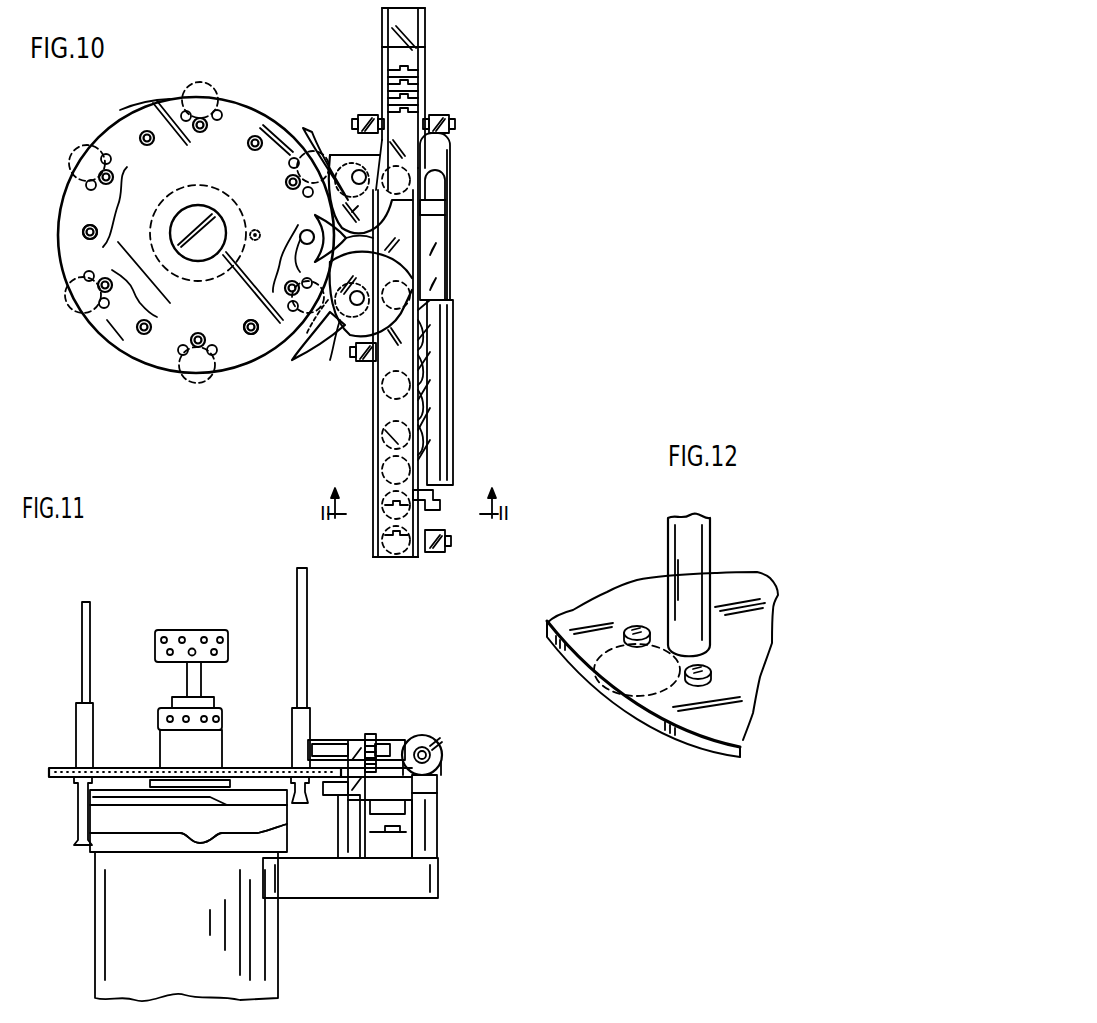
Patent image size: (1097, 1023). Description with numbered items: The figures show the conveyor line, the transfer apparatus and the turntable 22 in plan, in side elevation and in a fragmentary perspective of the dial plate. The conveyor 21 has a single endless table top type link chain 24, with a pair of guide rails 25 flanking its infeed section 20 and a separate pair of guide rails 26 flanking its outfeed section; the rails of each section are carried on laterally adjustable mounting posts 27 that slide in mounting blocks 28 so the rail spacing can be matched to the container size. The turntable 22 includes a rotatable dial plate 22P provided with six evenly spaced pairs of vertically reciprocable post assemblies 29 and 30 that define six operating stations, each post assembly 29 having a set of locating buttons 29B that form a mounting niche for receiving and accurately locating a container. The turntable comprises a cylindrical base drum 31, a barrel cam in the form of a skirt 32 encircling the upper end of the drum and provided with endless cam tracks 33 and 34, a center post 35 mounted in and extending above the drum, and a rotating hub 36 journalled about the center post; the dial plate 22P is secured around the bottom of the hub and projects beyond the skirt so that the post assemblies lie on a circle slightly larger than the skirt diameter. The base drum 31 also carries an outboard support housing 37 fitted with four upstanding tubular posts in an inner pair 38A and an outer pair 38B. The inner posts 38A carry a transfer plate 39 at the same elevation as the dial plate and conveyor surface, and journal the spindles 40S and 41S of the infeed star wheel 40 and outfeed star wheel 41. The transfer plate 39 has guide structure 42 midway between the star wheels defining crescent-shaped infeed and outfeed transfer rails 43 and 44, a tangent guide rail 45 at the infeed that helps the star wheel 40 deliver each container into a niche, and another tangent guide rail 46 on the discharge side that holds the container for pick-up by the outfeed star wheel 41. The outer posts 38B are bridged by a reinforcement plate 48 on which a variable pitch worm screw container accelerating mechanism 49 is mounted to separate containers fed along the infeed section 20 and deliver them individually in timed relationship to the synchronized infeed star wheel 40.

In FIG. 10, the infeed section 20 is at (370, 452).
In FIG. 10, the guide rail 21 is at (374, 35).
In FIG. 10, the turntable 22 is at (140, 92).
In FIG. 10, the dial plate 22P is at (240, 163).
In FIG. 11, the dial plate 22P is at (100, 770).
In FIG. 12, the dial plate 22P is at (598, 615).
In FIG. 10, the link chain 24 is at (420, 84).
In FIG. 11, the link chain 24 is at (392, 806).
In FIG. 10, the guide rails 25 is at (416, 558).
In FIG. 10, the guide rails 26 is at (398, 47).
In FIG. 10, the mounting posts 27 is at (372, 116).
In FIG. 11, the mounting posts 27 is at (372, 742).
In FIG. 10, the mounting blocks 28 is at (356, 122).
In FIG. 11, the mounting blocks 28 is at (357, 745).
In FIG. 10, the post assembly 29 is at (112, 176).
In FIG. 12, the post assembly 29 is at (700, 563).
In FIG. 10, the locating buttons 29B is at (106, 155).
In FIG. 12, the locating buttons 29B is at (636, 626).
In FIG. 10, the post assembly 30 is at (86, 235).
In FIG. 11, the post assembly 30 is at (310, 642).
In FIG. 11, the base drum 31 is at (148, 981).
In FIG. 11, the skirt 32 is at (131, 835).
In FIG. 11, the cam track 33 is at (155, 800).
In FIG. 11, the cam track 34 is at (125, 844).
In FIG. 11, the center post 35 is at (188, 680).
In FIG. 11, the rotating hub 36 is at (208, 753).
In FIG. 11, the outboard support housing 37 is at (358, 891).
In FIG. 11, the inner pair of posts 38A is at (338, 822).
In FIG. 11, the outer pair of posts 38B is at (430, 850).
In FIG. 10, the transfer plate 39 is at (352, 310).
In FIG. 11, the transfer plate 39 is at (335, 785).
In FIG. 10, the infeed star wheel 40 is at (371, 287).
In FIG. 11, the infeed star wheel 40 is at (332, 748).
In FIG. 10, the spindle 40S is at (357, 306).
In FIG. 10, the outfeed star wheel 41 is at (370, 194).
In FIG. 10, the spindle 41S is at (355, 170).
In FIG. 10, the guide structure 42 is at (412, 248).
In FIG. 11, the guide structure 42 is at (341, 740).
In FIG. 10, the infeed transfer rail 43 is at (320, 280).
In FIG. 10, the outfeed transfer rail 44 is at (322, 218).
In FIG. 10, the tangent guide rail 45 is at (292, 354).
In FIG. 10, the tangent guide rail 46 is at (320, 150).
In FIG. 11, the reinforcement plate 48 is at (438, 794).
In FIG. 10, the container accelerating mechanism 49 is at (455, 320).
In FIG. 11, the container accelerating mechanism 49 is at (450, 748).